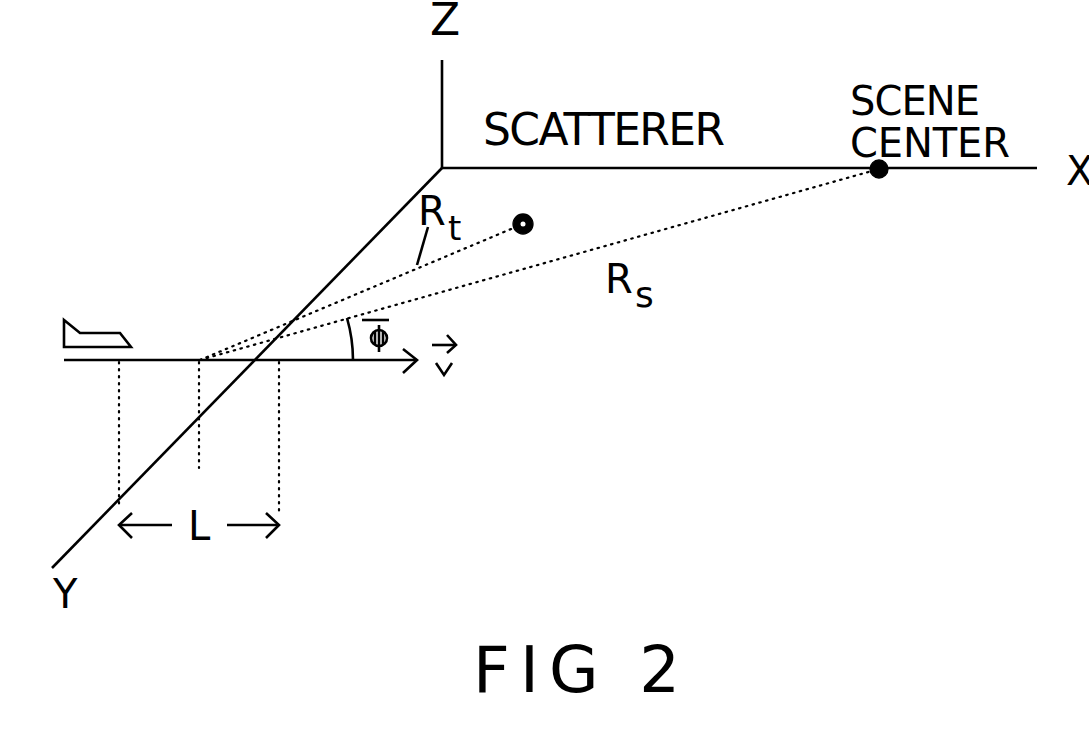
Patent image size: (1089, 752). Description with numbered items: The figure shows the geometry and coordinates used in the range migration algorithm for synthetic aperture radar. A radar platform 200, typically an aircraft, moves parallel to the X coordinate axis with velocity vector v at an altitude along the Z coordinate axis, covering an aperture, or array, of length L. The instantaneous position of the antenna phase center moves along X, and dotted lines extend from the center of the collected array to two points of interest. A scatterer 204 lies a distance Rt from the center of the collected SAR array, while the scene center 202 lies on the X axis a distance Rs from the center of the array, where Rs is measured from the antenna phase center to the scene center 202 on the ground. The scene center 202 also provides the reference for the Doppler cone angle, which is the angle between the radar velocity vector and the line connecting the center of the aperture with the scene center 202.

The radar platform 200 is at (146, 319).
The scene center 202 is at (900, 198).
The scatterer 204 is at (508, 155).